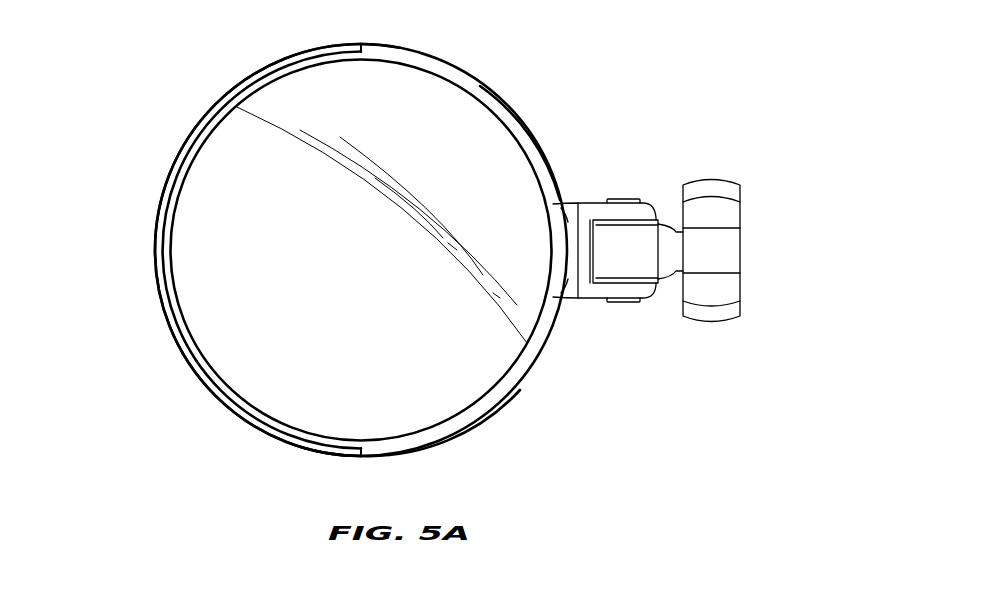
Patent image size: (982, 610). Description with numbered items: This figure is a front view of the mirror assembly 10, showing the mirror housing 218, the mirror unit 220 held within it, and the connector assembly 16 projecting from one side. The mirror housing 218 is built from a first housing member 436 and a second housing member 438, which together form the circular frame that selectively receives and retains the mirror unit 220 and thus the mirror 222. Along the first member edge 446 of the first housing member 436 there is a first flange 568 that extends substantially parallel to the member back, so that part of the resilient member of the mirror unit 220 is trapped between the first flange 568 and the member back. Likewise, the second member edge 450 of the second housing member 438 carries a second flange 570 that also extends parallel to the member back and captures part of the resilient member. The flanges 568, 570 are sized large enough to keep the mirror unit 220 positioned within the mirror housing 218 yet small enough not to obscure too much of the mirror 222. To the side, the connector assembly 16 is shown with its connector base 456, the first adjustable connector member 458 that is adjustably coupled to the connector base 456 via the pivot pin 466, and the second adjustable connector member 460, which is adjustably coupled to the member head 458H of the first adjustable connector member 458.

The mirror assembly 10 is at (185, 65).
The connector assembly 16 is at (722, 337).
The mirror housing 218 is at (497, 80).
The mirror unit 220 is at (240, 354).
The mirror 222 is at (212, 191).
The first housing member 436 is at (500, 400).
The second housing member 438 is at (275, 437).
The first member edge 446 is at (540, 152).
The second member edge 450 is at (152, 288).
The connector base 456 is at (592, 288).
The first adjustable connector member 458 is at (651, 246).
The member head 458H is at (725, 292).
The second adjustable connector member 460 is at (722, 190).
The pivot pin 466 is at (630, 200).
The first flange 568 is at (420, 62).
The second flange 570 is at (165, 235).